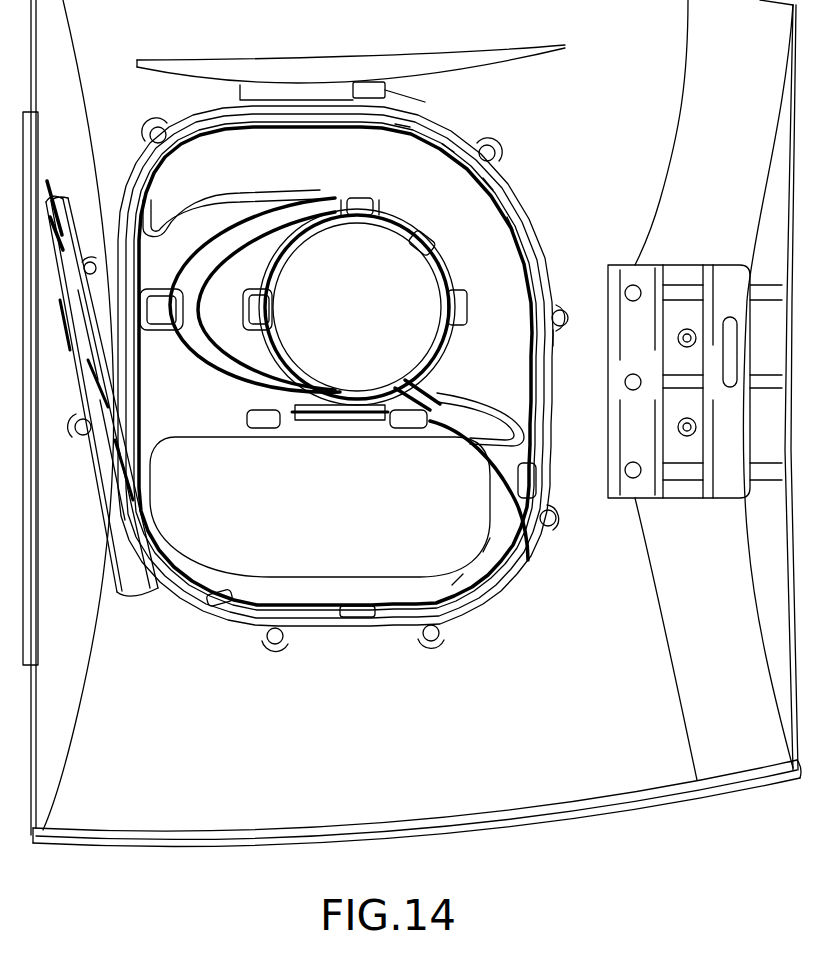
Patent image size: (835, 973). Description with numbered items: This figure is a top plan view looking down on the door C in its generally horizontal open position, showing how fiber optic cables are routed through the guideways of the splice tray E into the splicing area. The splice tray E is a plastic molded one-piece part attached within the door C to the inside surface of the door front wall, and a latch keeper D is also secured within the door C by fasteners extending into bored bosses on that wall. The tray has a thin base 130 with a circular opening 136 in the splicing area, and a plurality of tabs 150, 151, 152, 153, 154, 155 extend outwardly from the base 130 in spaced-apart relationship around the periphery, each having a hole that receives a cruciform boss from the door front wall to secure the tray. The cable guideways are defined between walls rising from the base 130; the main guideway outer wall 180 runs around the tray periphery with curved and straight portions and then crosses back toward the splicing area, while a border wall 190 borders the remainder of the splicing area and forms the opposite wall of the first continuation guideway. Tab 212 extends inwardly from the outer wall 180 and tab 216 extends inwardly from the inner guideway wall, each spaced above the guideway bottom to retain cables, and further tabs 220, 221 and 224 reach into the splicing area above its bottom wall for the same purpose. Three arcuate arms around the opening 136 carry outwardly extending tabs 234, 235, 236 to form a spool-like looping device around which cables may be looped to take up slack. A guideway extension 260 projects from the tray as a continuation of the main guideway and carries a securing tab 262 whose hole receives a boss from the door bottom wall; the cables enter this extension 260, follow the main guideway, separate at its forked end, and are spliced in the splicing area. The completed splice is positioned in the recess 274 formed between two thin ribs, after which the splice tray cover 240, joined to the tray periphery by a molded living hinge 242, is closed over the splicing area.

The tray base 130 is at (356, 628).
The circular opening 136 is at (322, 392).
The tab 150 is at (270, 650).
The tab 151 is at (434, 648).
The tab 152 is at (554, 527).
The tab 153 is at (565, 305).
The tab 154 is at (496, 150).
The tab 155 is at (151, 127).
The main guideway outer wall 180 is at (168, 598).
The border wall 190 is at (222, 195).
The tab 212 is at (356, 606).
The tab 216 is at (226, 592).
The tab 220 is at (262, 428).
The tab 221 is at (406, 428).
The tab 224 is at (362, 197).
The tab 234 is at (268, 310).
The tab 235 is at (416, 241).
The tab 236 is at (450, 305).
The splice tray cover 240 is at (352, 75).
The living hinge 242 is at (425, 102).
The guideway extension 260 is at (75, 190).
The securing tab 262 is at (80, 438).
The splice receiving recess 274 is at (340, 420).
The door C is at (628, 820).
The latch keeper D is at (686, 258).
The splice tray E is at (550, 205).